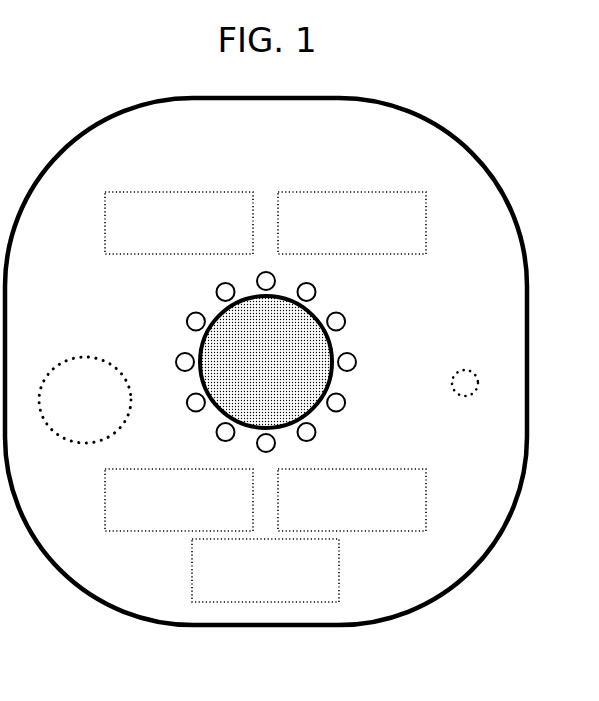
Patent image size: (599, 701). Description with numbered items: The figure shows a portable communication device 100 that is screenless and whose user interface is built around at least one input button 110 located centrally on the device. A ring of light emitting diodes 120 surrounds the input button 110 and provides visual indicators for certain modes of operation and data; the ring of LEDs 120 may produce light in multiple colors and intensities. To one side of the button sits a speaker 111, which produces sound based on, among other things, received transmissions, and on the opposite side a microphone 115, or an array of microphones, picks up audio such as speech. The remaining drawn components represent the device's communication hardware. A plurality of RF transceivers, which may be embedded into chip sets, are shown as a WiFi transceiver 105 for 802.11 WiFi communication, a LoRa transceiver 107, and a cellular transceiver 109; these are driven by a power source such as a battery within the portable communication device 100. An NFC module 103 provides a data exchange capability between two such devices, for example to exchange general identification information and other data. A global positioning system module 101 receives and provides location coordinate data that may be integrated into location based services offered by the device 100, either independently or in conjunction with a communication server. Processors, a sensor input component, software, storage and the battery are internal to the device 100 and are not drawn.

The portable communication device 100 is at (250, 144).
The global positioning system (GPS) module 101 is at (162, 241).
The NFC module 103 is at (335, 241).
The WiFi RF transceiver 105 is at (162, 518).
The LoRa RF transceiver 107 is at (335, 518).
The cellular RF transceiver 109 is at (248, 588).
The input button 110 is at (249, 371).
The speaker 111 is at (70, 409).
The microphone 115 is at (470, 368).
The ring of light emitting diodes (LEDs) 120 is at (179, 354).